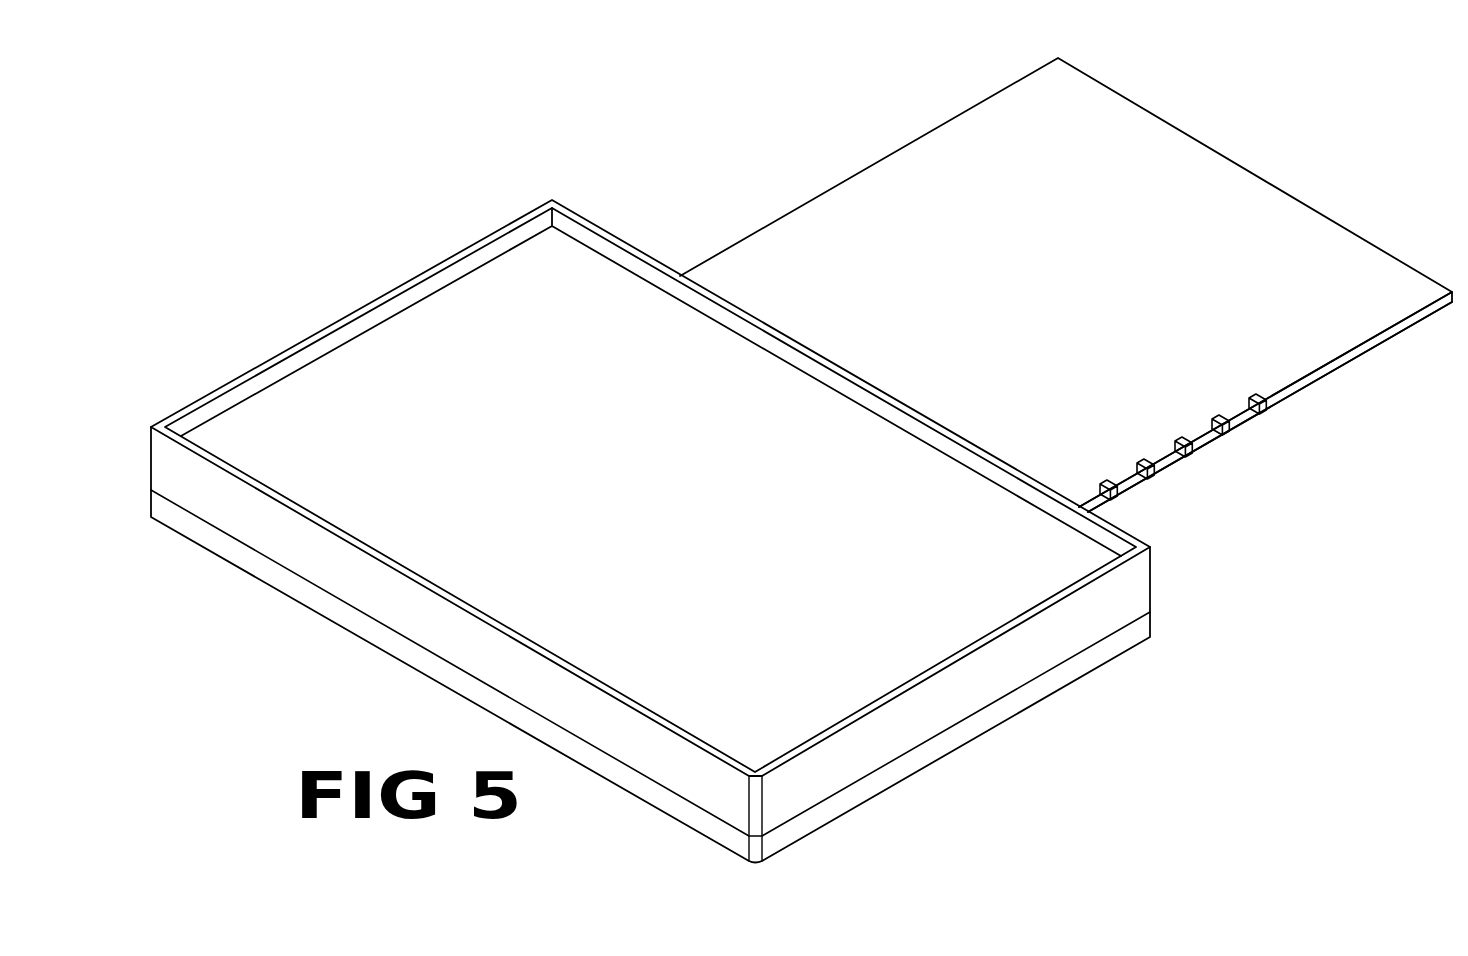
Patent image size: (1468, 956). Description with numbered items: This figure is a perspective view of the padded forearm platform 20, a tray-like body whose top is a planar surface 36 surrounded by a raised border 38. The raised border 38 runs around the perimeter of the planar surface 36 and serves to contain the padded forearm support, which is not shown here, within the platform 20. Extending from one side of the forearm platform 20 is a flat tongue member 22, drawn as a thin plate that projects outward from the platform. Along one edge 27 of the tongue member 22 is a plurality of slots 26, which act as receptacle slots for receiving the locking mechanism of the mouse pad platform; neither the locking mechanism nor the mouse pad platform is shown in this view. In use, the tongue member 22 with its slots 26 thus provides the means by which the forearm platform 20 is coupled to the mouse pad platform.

The padded forearm platform 20 is at (995, 675).
The tongue member 22 is at (1233, 207).
The slots 26 is at (1177, 442).
The edge 27 is at (1347, 362).
The planar surface 36 is at (707, 707).
The raised border 38 is at (878, 699).